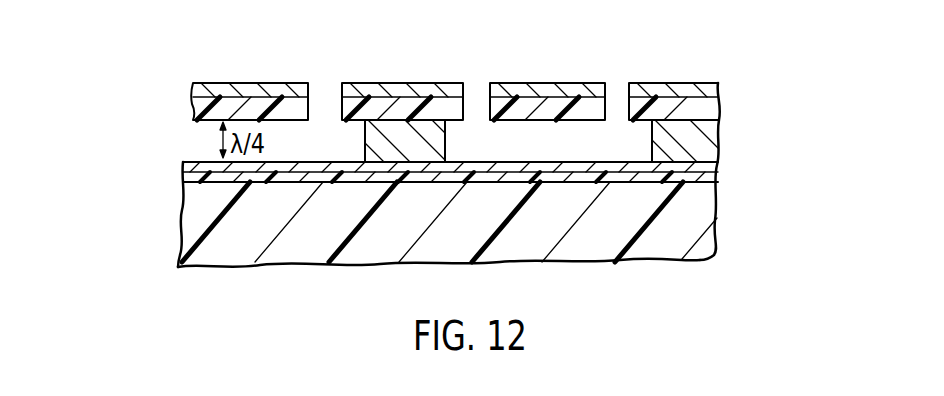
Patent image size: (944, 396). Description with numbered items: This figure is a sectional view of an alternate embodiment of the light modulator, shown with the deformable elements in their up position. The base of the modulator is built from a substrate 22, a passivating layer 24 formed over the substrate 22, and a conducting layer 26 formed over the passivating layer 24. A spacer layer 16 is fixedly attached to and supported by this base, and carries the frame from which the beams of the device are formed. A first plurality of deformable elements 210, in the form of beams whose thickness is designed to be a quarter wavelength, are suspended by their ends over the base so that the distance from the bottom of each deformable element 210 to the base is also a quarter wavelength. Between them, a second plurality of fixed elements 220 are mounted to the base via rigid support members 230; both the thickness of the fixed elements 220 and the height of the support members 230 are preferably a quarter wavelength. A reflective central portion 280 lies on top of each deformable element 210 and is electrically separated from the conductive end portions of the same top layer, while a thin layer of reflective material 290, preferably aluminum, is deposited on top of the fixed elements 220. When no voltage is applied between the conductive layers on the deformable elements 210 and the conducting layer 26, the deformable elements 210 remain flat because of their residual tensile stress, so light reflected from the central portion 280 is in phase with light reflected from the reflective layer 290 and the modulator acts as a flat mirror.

The spacer layer 16 is at (720, 135).
The substrate 22 is at (702, 213).
The passivating layer 24 is at (718, 173).
The conducting layer 26 is at (718, 165).
The deformable elements 210 is at (193, 106).
The fixed elements 220 is at (338, 108).
The rigid support members 230 is at (452, 147).
The conductive central portion 280 is at (217, 83).
The reflective material layer 290 is at (408, 83).